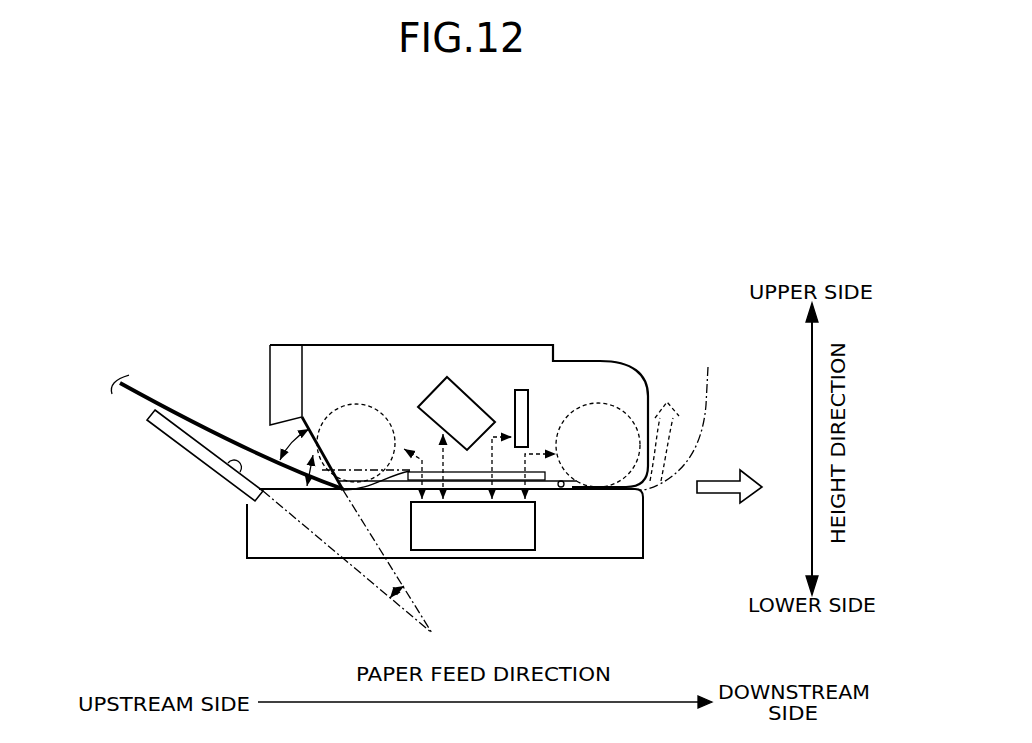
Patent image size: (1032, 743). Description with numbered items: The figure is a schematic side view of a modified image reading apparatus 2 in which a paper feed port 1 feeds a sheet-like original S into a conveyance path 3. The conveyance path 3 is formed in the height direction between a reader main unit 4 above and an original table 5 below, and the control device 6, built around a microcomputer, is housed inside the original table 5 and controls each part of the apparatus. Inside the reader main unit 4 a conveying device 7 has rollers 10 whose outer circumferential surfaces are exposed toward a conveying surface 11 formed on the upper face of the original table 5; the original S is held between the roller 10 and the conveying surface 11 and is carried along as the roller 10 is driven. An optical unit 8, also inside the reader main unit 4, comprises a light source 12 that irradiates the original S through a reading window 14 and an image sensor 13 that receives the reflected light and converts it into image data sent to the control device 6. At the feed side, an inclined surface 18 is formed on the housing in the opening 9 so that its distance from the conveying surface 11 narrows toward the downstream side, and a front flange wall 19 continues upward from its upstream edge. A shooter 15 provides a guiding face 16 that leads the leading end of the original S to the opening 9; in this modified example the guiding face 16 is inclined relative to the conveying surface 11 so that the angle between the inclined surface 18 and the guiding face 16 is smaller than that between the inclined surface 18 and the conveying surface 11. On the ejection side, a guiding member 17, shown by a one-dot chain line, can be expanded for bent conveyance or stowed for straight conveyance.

The paper feed port 1 is at (252, 438).
The image reading apparatus 2 is at (318, 178).
The conveyance path 3 is at (347, 513).
The reader main unit 4 is at (604, 361).
The original table 5 is at (648, 535).
The control device 6 is at (474, 551).
The conveying device 7 is at (478, 315).
The optical unit 8 is at (473, 361).
The opening 9 is at (299, 486).
The roller 10 is at (357, 403).
The conveying surface 11 is at (563, 489).
The light source 12 is at (480, 403).
The image sensor 13 is at (516, 391).
The reading window 14 is at (405, 478).
The shooter 15 is at (188, 458).
The guiding face 16 is at (237, 486).
The guiding member 17 is at (707, 387).
The inclined surface 18 is at (291, 450).
The front flange wall 19 is at (298, 363).
The original S is at (126, 398).